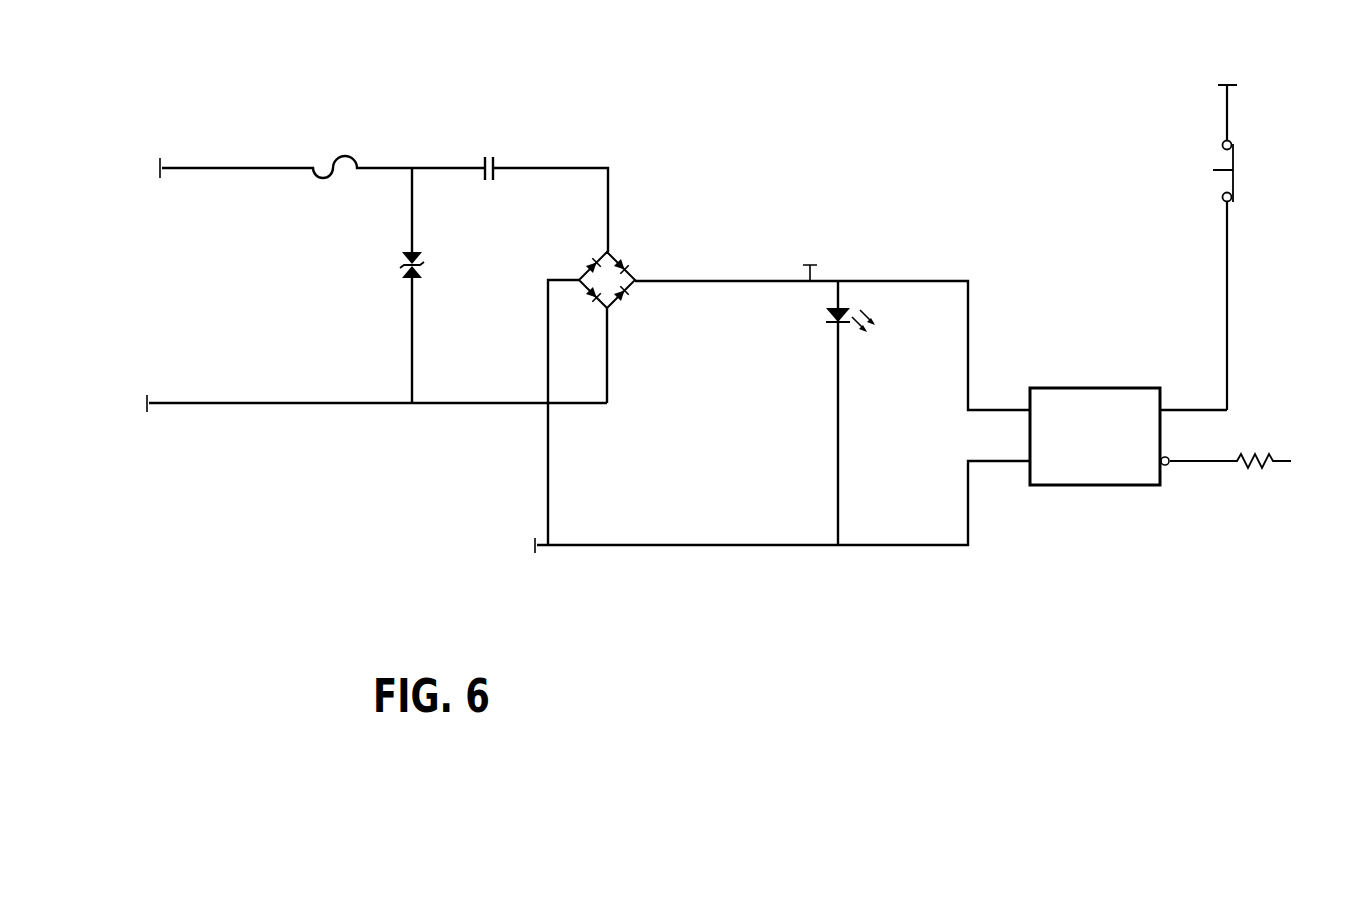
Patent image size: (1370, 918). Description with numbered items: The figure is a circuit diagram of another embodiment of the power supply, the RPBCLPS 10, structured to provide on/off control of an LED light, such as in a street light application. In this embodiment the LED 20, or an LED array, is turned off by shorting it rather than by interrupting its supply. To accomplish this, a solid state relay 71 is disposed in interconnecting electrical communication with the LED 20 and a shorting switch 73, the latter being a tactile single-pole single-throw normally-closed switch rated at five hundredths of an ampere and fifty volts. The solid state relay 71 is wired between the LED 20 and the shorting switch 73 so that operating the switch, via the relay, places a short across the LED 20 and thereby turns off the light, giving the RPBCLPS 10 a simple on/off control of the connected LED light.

The RPBCLPS 10 is at (950, 110).
The LED 20 is at (818, 316).
The solid state relay 71 is at (1108, 388).
The shorting switch 73 is at (1236, 192).